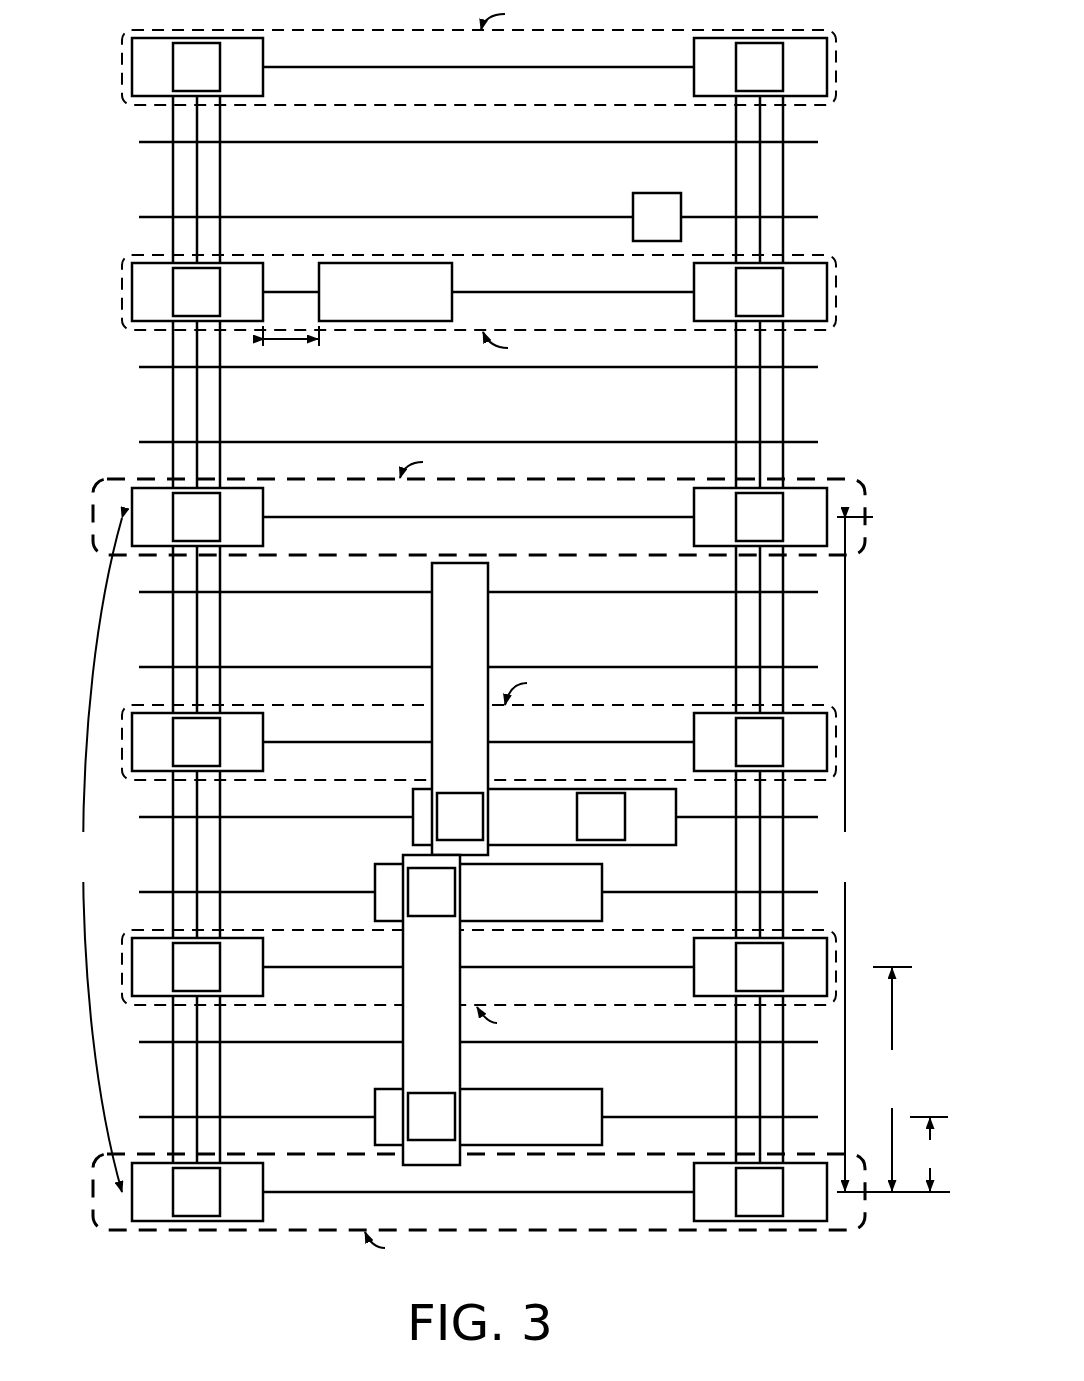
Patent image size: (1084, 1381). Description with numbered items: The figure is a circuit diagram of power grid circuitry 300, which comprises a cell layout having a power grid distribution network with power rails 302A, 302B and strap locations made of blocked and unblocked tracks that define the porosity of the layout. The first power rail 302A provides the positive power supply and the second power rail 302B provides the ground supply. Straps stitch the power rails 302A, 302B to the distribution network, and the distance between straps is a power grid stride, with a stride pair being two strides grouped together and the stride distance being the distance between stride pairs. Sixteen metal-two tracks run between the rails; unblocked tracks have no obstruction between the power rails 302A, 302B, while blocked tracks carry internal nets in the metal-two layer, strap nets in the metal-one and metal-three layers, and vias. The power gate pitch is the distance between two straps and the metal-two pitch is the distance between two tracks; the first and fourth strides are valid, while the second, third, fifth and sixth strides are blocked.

The power grid circuitry 300 is at (86, 22).
The first power rail 302A is at (159, 406).
The second power rail 302B is at (800, 408).